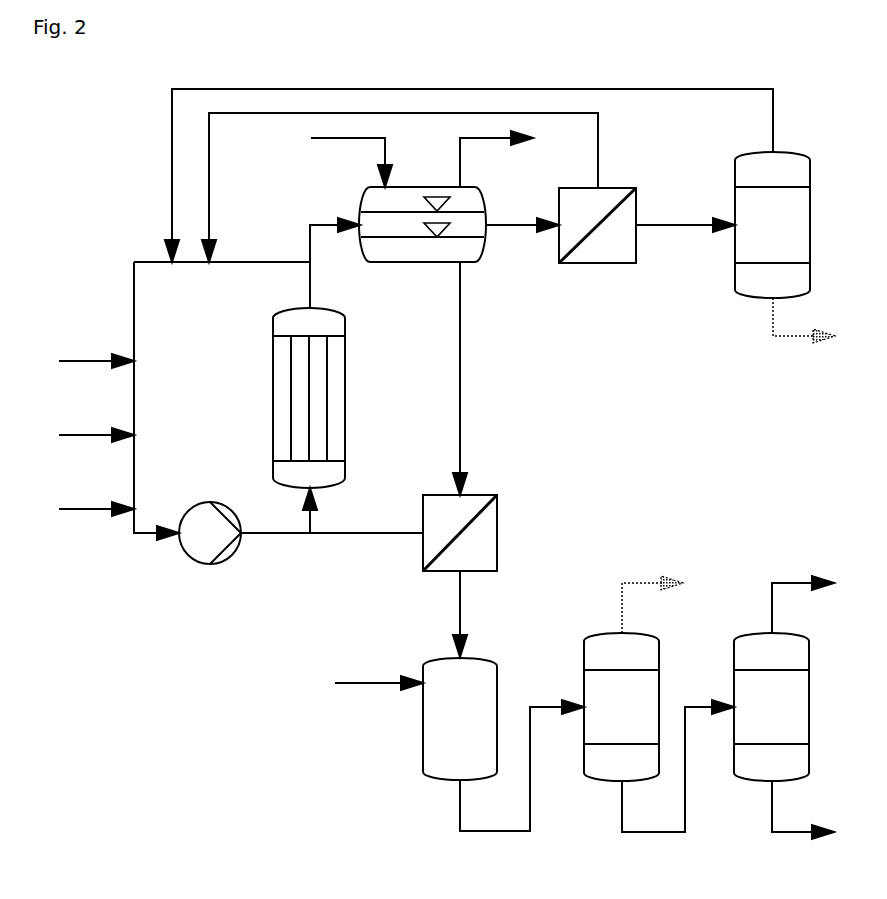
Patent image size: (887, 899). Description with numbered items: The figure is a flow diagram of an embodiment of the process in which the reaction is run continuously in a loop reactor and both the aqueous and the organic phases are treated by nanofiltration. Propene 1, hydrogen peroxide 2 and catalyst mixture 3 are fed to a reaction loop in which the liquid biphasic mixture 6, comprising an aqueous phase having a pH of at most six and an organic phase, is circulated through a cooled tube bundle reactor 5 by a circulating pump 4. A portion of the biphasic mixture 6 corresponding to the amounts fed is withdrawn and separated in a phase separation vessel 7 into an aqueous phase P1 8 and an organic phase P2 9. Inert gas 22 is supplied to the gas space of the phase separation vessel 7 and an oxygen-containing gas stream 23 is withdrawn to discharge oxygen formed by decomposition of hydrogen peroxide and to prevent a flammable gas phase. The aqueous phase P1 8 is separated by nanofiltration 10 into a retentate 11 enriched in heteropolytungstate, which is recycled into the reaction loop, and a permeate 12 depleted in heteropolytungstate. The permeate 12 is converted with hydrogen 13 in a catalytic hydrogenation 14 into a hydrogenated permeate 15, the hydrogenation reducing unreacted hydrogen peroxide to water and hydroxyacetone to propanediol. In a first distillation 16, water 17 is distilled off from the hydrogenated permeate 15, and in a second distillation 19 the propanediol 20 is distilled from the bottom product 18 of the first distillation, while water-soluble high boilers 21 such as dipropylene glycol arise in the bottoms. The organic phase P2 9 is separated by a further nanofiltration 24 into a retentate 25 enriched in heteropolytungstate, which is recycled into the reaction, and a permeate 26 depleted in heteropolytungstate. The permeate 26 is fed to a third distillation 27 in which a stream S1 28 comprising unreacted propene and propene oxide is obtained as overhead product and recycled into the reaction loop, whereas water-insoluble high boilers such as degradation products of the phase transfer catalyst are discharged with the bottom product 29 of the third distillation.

The propene 1 is at (96, 345).
The hydrogen peroxide 2 is at (96, 419).
The catalyst mixture 3 is at (96, 493).
The circulating pump 4 is at (210, 558).
The cooled tube bundle reactor 5 is at (328, 398).
The liquid biphasic mixture 6 is at (247, 263).
The phase separation vessel 7 is at (422, 244).
The aqueous phase P1 8 is at (473, 378).
The organic phase P2 9 is at (522, 239).
The nanofiltration 10 is at (485, 533).
The retentate 11 is at (366, 514).
The permeate 12 is at (477, 614).
The hydrogen 13 is at (379, 667).
The catalytic hydrogenation 14 is at (441, 732).
The hydrogenated permeate 15 is at (522, 785).
The first distillation 16 is at (608, 719).
The water 17 is at (652, 588).
The bottom product 18 is at (678, 785).
The second distillation 19 is at (757, 720).
The 1,2-propanediol 20 is at (803, 588).
The water-soluble high boilers 21 is at (803, 826).
The inert gas 22 is at (344, 162).
The oxygen-containing gas stream 23 is at (503, 159).
The nanofiltration 24 is at (597, 245).
The retentate 25 is at (420, 187).
The permeate 26 is at (685, 240).
The third distillation 27 is at (757, 237).
The stream S1 28 is at (490, 175).
The bottom product 29 is at (804, 337).